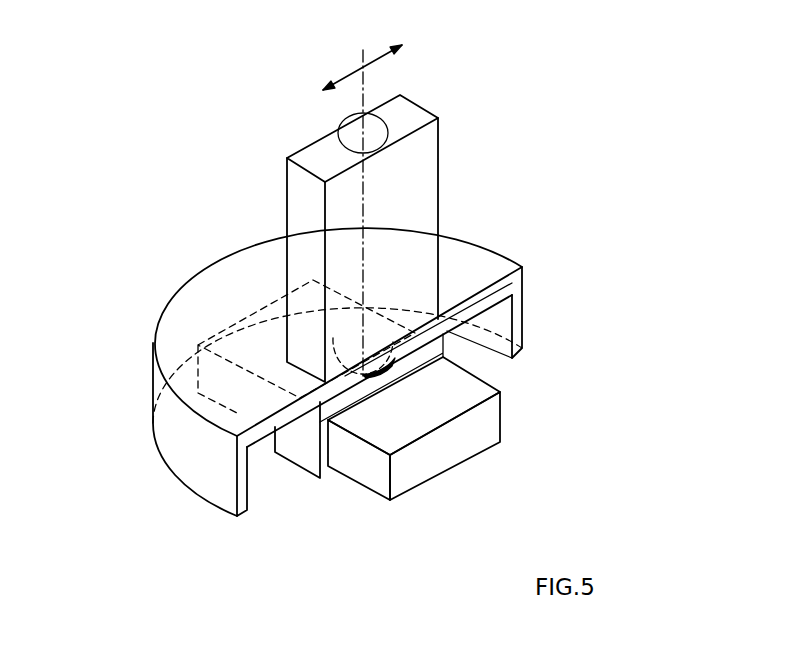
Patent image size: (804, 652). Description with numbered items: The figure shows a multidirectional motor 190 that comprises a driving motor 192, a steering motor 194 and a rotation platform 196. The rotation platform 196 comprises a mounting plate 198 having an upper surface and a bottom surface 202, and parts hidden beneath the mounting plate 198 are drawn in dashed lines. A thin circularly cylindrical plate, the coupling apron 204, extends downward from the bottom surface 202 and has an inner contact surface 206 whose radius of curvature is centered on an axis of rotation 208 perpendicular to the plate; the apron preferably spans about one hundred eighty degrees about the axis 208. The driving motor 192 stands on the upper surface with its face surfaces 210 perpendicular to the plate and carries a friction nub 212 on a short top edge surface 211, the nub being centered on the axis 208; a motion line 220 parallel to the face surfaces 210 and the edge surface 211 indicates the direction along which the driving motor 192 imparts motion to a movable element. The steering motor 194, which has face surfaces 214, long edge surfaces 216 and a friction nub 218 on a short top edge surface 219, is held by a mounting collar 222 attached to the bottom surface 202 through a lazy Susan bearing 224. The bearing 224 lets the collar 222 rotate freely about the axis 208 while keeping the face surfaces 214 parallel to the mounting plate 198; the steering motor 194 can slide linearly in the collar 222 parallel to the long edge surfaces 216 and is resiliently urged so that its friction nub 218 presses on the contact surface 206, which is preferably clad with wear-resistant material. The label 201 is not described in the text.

The multidirectional motor 190 is at (620, 126).
The driving motor 192 is at (449, 99).
The steering motor 194 is at (537, 417).
The rotation platform 196 is at (545, 238).
The mounting plate 198 is at (163, 342).
The top surface 201 is at (173, 315).
The bottom surface 202 is at (483, 315).
The coupling apron 204 is at (205, 460).
The inner contact surface 206 is at (213, 482).
The axis of rotation 208 is at (365, 95).
The face surfaces 210 is at (346, 196).
The short top edge surface 211 is at (315, 155).
The friction nub 212 is at (380, 130).
The face surfaces 214 is at (390, 427).
The long edge surfaces 216 is at (372, 477).
The friction nub 218 is at (237, 313).
The short top edge surface 219 is at (275, 300).
The motion line 220 is at (353, 70).
The mounting collar 222 is at (293, 438).
The lazy Susan bearing 224 is at (447, 340).